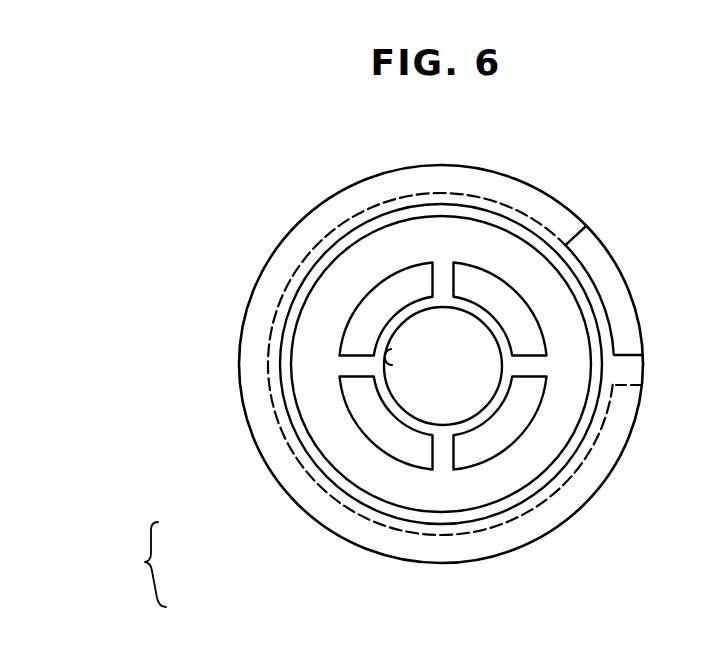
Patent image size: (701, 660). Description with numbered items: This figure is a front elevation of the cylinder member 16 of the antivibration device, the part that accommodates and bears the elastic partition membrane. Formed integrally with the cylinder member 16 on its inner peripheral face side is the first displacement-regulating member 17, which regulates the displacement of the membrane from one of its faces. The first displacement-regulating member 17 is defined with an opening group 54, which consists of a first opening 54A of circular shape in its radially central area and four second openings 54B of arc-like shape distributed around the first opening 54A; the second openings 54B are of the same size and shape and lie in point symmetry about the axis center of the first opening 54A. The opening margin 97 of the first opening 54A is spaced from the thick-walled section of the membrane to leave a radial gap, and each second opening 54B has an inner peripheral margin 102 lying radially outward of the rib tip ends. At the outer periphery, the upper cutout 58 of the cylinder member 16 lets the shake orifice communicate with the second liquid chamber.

The cylinder member 16 is at (541, 182).
The first displacement-regulating member 17 is at (578, 410).
The upper cutout 58 is at (628, 297).
The inner peripheral margin 102 is at (493, 313).
The opening group 54 is at (136, 564).
The first opening 54A is at (407, 390).
The second openings 54B is at (377, 297).
The opening margin 97 is at (390, 349).